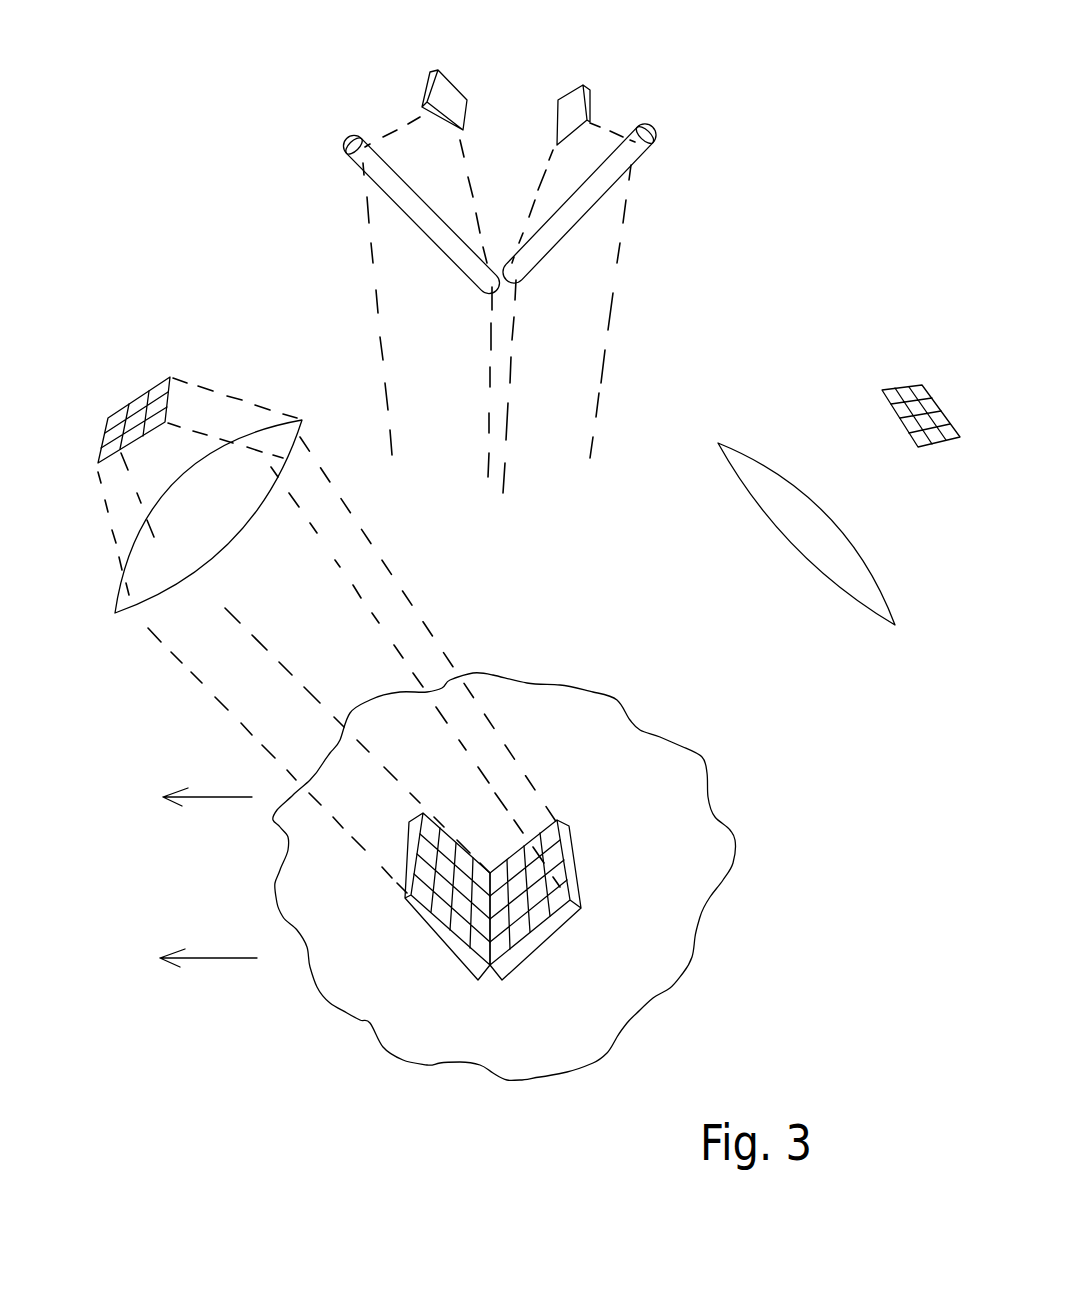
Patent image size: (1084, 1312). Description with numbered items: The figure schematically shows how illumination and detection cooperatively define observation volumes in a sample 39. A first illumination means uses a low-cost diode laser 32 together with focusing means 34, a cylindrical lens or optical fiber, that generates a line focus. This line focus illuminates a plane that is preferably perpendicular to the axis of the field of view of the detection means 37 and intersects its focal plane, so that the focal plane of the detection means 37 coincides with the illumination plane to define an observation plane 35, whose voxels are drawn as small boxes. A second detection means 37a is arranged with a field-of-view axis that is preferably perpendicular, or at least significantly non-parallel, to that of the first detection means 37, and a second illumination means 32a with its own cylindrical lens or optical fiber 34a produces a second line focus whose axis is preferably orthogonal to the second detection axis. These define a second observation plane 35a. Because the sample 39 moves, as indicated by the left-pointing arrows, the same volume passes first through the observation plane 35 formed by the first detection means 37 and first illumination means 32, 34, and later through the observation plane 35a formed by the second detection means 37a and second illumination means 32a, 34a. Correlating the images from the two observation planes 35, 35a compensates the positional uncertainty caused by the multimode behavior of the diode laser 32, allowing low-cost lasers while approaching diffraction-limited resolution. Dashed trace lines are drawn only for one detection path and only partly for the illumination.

The diode laser 32 is at (583, 88).
The second illumination means 32a is at (447, 88).
The focusing means 34 is at (633, 155).
The cylindrical lens or optical fiber 34a is at (380, 172).
The observation plane 35 is at (485, 907).
The second observation plane 35a is at (440, 962).
The detection means 37 is at (85, 553).
The second detection means 37a is at (818, 390).
The sample 39 is at (693, 850).